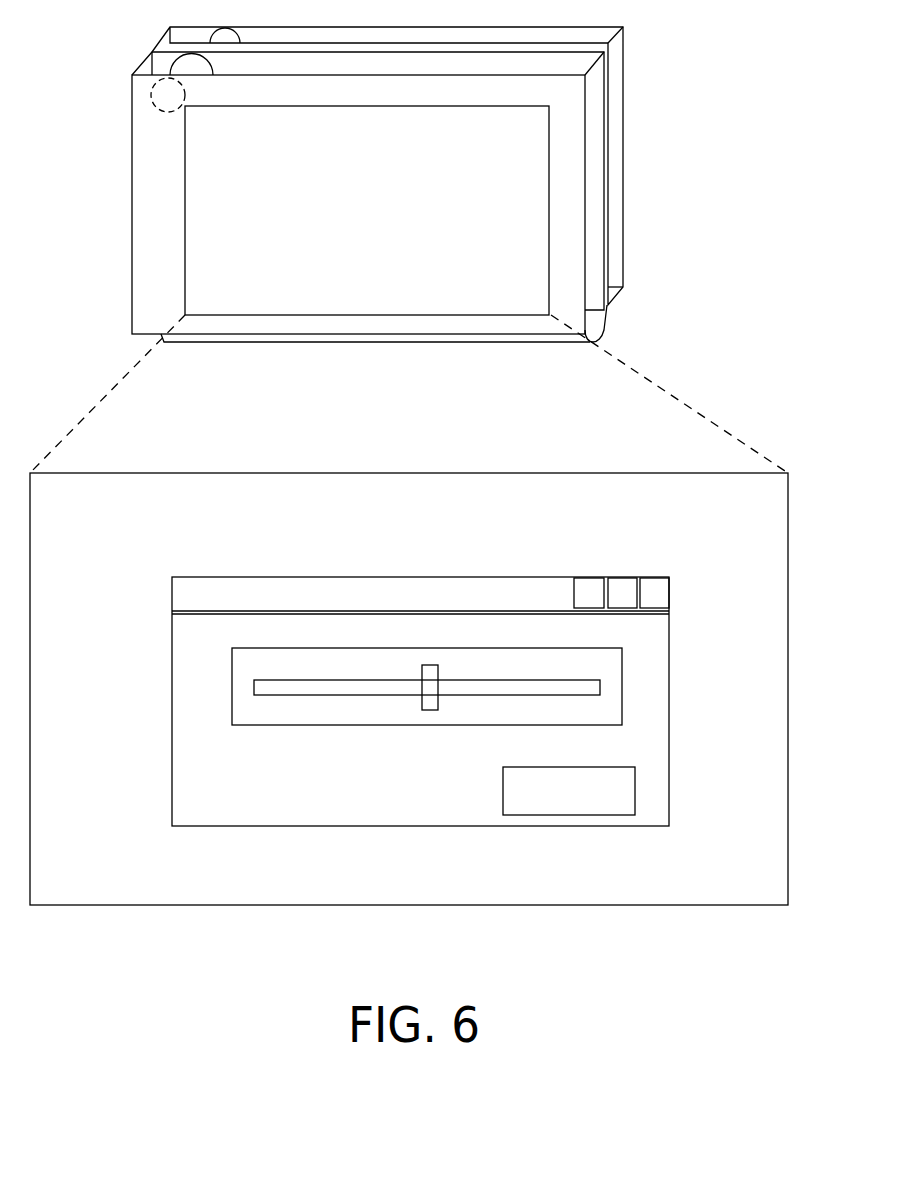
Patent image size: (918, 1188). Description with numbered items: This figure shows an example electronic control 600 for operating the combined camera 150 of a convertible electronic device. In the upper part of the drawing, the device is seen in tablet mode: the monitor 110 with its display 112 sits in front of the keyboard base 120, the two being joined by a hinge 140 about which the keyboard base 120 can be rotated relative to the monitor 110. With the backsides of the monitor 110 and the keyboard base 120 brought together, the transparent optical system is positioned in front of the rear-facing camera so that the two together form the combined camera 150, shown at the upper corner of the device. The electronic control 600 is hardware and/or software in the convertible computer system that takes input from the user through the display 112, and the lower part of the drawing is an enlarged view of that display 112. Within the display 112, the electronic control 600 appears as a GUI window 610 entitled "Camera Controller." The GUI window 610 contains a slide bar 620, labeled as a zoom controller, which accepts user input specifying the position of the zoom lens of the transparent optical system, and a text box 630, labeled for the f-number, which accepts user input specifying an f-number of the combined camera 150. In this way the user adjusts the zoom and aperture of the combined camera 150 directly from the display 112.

The monitor 110 is at (578, 276).
The display 112 is at (384, 130).
The keyboard base 120 is at (623, 121).
The hinge 140 is at (602, 328).
The combined camera 150 is at (216, 36).
The electronic control 600 is at (118, 492).
The GUI window 610 is at (172, 612).
The slide bar 620 is at (238, 675).
The text box 630 is at (635, 800).